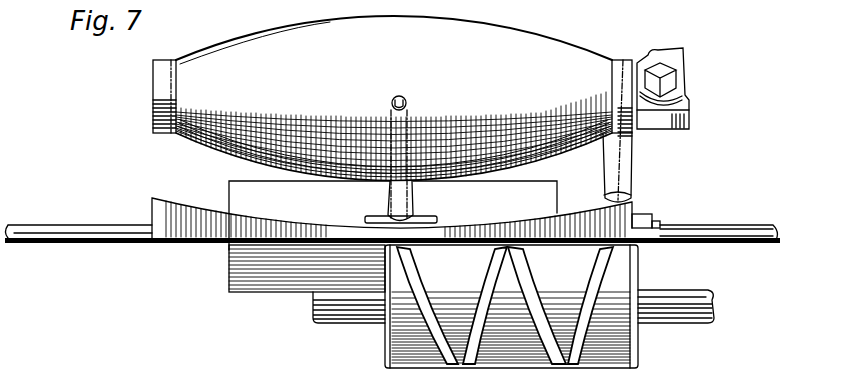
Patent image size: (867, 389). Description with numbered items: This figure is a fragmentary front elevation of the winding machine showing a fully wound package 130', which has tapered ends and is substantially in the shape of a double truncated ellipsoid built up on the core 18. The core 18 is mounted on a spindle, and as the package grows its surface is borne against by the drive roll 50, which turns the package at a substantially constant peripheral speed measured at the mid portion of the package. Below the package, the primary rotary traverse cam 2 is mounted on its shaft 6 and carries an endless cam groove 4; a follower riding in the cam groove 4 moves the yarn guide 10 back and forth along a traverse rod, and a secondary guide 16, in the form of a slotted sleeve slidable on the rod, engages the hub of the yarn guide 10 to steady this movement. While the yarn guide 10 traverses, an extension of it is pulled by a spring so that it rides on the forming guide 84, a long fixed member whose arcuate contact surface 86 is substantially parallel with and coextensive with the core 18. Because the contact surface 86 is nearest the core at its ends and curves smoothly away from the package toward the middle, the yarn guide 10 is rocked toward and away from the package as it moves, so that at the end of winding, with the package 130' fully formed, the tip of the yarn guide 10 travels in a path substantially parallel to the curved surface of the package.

The primary rotary traverse cam 2 is at (620, 366).
The endless cam groove 4 is at (560, 368).
The shaft 6 is at (692, 318).
The yarn guide 10 is at (621, 169).
The secondary guide 16 is at (18, 244).
The core 18 is at (621, 62).
The drive roll 50 is at (393, 215).
The forming guide 84 is at (170, 243).
The arcuate contact surface 86 is at (199, 181).
The full package 130' is at (392, 119).